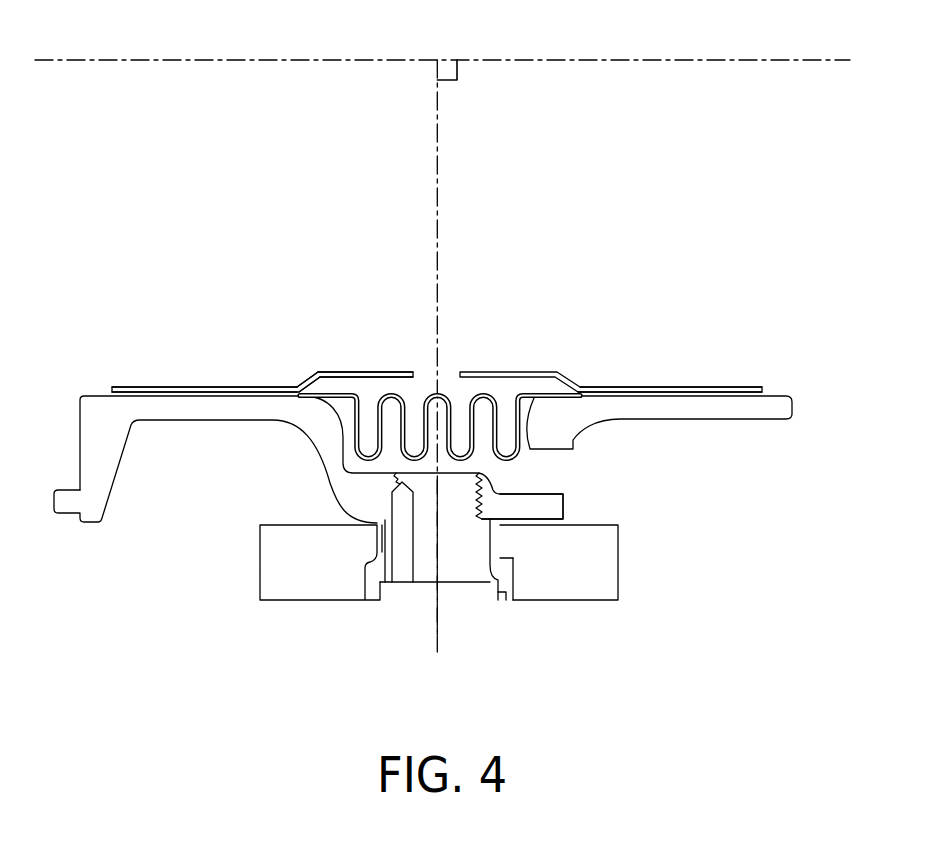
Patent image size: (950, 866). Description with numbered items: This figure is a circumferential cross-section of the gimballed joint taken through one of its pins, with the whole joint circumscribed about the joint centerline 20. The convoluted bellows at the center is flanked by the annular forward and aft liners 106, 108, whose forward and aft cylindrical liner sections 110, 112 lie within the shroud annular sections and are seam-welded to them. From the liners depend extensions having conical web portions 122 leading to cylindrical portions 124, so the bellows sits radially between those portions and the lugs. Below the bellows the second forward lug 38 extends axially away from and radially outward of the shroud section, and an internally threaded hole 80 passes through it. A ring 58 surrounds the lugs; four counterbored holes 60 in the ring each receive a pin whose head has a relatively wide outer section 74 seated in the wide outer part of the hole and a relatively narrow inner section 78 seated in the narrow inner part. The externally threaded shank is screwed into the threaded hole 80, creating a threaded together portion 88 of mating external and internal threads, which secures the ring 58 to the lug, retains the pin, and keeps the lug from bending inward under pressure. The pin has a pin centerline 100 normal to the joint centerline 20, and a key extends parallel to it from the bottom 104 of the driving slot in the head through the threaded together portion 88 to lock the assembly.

The joint centerline 20 is at (345, 59).
The second forward lug 38 is at (565, 508).
The ring 58 is at (593, 603).
The counterbored hole 60 is at (510, 558).
The wide outer section 74 is at (503, 590).
The narrow inner section 78 is at (513, 577).
The internally threaded hole 80 is at (477, 507).
The threaded together portion 88 is at (497, 499).
The pin centerline 100 is at (438, 633).
The bottom of driving slot 104 is at (430, 588).
The forward liner 106 is at (155, 386).
The aft liner 108 is at (742, 388).
The forward cylindrical liner section 110 is at (212, 386).
The aft cylindrical liner section 112 is at (665, 388).
The conical web portion 122 is at (305, 375).
The cylindrical portion 124 is at (378, 372).